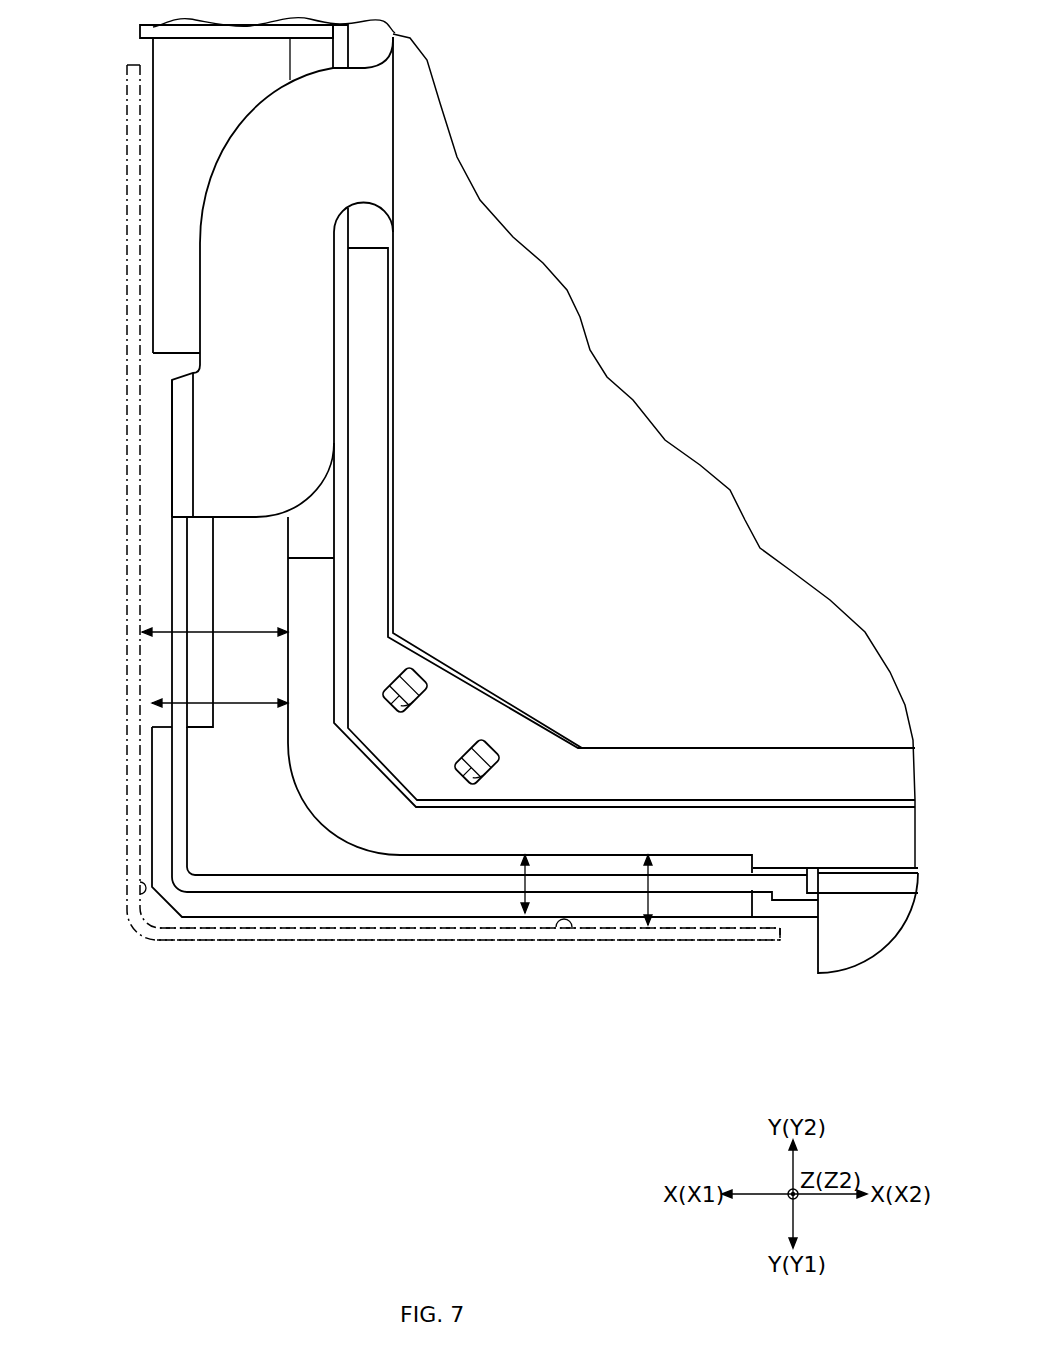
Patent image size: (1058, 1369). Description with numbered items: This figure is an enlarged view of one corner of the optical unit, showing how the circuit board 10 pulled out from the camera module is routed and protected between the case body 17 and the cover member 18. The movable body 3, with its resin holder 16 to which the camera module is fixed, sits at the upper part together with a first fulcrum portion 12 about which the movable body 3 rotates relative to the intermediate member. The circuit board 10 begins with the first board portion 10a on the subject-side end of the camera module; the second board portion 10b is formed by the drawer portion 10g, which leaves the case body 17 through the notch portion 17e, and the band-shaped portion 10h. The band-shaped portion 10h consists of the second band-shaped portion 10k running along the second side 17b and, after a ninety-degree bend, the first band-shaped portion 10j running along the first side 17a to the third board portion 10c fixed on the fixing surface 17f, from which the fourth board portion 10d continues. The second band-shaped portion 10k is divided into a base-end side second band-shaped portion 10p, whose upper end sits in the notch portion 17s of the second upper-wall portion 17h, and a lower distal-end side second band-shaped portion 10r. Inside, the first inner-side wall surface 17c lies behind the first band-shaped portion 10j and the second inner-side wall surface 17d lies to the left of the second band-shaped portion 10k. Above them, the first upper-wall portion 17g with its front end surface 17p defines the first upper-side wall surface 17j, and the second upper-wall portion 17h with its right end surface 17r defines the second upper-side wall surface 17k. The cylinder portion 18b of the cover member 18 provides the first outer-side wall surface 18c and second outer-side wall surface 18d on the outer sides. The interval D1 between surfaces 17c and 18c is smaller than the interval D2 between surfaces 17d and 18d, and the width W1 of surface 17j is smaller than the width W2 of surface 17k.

The movable body 3 is at (266, 52).
The holder 16 is at (333, 52).
The case body 17 is at (153, 115).
The circuit board 10 is at (576, 505).
The first board portion 10a is at (388, 322).
The second board portion 10b is at (182, 292).
The drawer portion 10g is at (200, 232).
The third board portion 10c is at (870, 867).
The fourth board portion 10d is at (818, 958).
The band-shaped portion 10h is at (483, 946).
The first band-shaped portion 10j is at (277, 893).
The second band-shaped portion 10k is at (417, 801).
The distal-end side second band-shaped portion 10r is at (172, 812).
The base-end side second band-shaped portion 10p is at (172, 533).
The first fulcrum portion 12 is at (398, 759).
The first side 17a is at (632, 982).
The second side 17b is at (107, 547).
The first inner-side wall surface 17c is at (608, 853).
The second inner-side wall surface 17d is at (288, 583).
The notch portion 17e is at (308, 558).
The fixing surface 17f is at (840, 875).
The first upper-wall portion 17g is at (619, 949).
The front end surface 17p is at (482, 918).
The second upper-wall portion 17h is at (423, 822).
The right end surface 17r is at (148, 770).
The first upper-side wall surface 17j is at (397, 905).
The second upper-side wall surface 17k is at (160, 750).
The notch portion 17s is at (160, 358).
The cover member 18 is at (470, 989).
The cylinder portion 18b is at (693, 942).
The first outer-side wall surface 18c is at (558, 928).
The second outer-side wall surface 18d is at (140, 878).
The interval D1 is at (650, 870).
The interval D2 is at (253, 632).
The width W1 is at (527, 870).
The width W2 is at (252, 703).